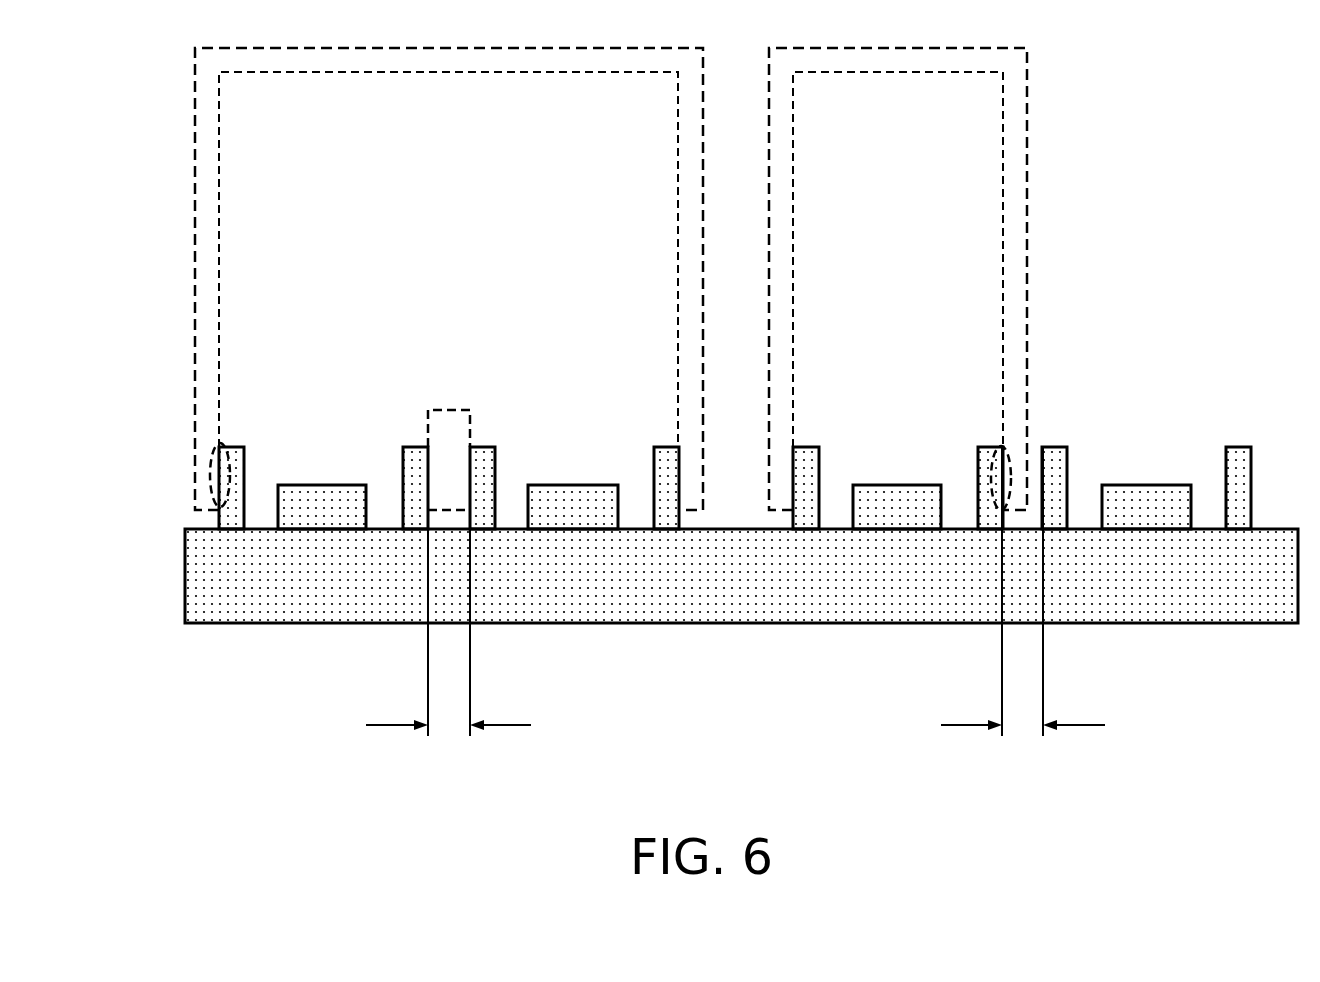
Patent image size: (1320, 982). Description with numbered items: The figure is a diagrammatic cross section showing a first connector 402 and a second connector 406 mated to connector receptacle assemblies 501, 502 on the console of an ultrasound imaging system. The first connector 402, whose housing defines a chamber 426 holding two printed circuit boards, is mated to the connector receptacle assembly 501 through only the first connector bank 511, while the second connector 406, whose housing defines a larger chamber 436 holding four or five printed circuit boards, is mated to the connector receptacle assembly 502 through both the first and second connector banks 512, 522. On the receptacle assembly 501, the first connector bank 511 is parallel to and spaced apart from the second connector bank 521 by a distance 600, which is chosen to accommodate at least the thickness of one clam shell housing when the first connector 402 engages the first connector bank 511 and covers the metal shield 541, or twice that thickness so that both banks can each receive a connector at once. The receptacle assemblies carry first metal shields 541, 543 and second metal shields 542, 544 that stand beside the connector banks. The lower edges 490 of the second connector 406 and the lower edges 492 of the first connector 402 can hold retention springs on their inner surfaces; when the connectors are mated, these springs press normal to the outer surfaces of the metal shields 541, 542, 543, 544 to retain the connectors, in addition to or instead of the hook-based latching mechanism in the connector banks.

The first connector 402 is at (1027, 118).
The second connector 406 is at (195, 120).
The chamber 426 is at (918, 266).
The chamber 436 is at (464, 266).
The lower edges 490 is at (210, 466).
The lower edges 492 is at (1008, 468).
The connector receptacle assembly 501 is at (1118, 605).
The connector receptacle assembly 502 is at (358, 605).
The first connector bank 511 is at (898, 485).
The first connector bank 512 is at (321, 485).
The second connector bank 521 is at (1145, 485).
The second connector bank 522 is at (574, 485).
The first metal shield 541 is at (812, 447).
The second metal shield 542 is at (1238, 447).
The first metal shield 543 is at (240, 447).
The second metal shield 544 is at (660, 447).
The distance 600 is at (510, 725).